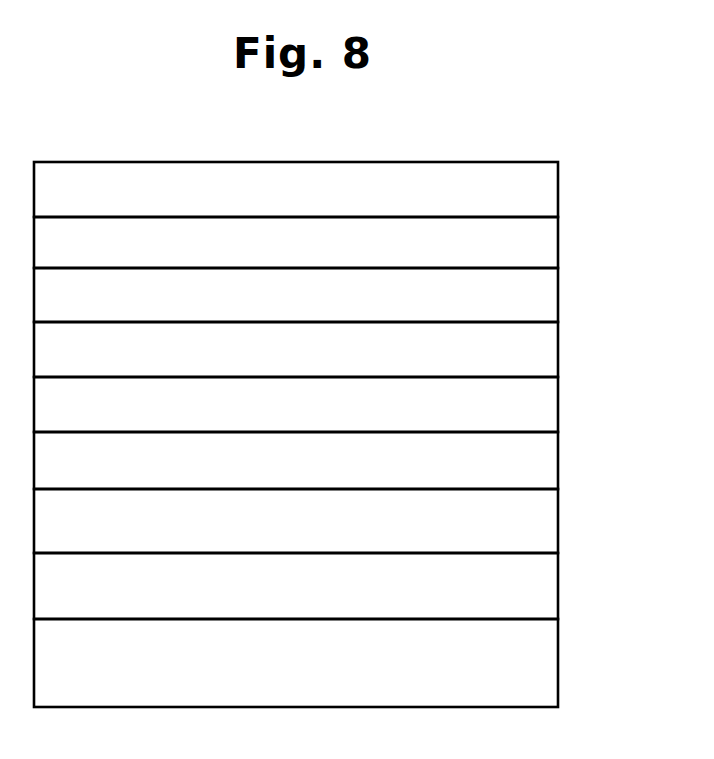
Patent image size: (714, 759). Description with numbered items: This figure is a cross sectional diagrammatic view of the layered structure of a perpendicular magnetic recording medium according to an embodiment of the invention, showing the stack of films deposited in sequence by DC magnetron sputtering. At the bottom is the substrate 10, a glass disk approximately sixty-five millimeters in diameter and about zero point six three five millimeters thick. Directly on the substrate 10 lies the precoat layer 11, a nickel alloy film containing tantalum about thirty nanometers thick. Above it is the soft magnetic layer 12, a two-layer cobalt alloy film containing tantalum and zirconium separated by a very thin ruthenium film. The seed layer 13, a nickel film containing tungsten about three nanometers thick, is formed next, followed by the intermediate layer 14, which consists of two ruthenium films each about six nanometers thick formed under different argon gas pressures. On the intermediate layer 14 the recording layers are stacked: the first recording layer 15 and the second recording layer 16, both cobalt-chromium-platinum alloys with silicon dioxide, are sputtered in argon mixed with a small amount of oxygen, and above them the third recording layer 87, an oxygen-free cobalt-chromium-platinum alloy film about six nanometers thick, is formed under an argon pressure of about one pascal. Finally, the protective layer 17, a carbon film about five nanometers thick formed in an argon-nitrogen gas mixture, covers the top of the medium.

The substrate 10 is at (530, 643).
The precoat layer 11 is at (535, 580).
The soft magnetic layer 12 is at (530, 516).
The seed layer 13 is at (530, 463).
The intermediate layer 14 is at (530, 405).
The first recording layer 15 is at (530, 351).
The second recording layer 16 is at (530, 295).
The third recording layer 87 is at (530, 240).
The protective layer 17 is at (530, 187).